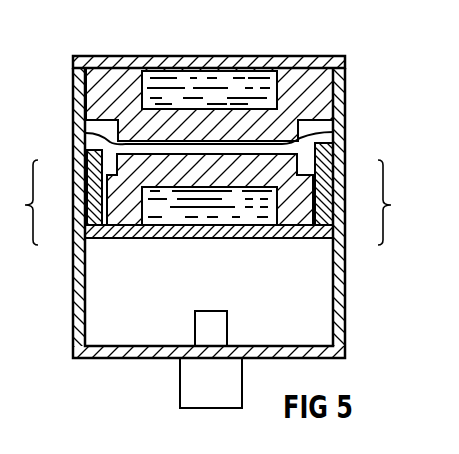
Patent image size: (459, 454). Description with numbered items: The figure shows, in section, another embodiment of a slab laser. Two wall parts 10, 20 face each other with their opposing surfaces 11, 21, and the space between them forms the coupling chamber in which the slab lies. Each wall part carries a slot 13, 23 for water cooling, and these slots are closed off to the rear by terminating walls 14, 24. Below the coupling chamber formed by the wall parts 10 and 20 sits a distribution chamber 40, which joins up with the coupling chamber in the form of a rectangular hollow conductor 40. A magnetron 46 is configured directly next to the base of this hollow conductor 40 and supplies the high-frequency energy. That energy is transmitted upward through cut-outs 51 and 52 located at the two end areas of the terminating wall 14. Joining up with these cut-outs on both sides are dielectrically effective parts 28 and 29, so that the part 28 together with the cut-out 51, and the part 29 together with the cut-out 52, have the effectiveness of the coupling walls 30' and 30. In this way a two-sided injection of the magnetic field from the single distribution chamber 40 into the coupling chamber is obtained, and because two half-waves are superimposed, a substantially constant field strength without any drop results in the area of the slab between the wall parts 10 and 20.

The wall part 10 is at (124, 188).
The opposing surface 11 is at (345, 132).
The slot 13 is at (180, 207).
The terminating wall 14 is at (223, 241).
The wall part 20 is at (345, 87).
The opposing surface 21 is at (86, 135).
The slot 23 is at (245, 77).
The terminating wall 24 is at (176, 56).
The dielectrically effective part 28 is at (92, 172).
The dielectrically effective part 29 is at (325, 178).
The coupling wall 30 is at (397, 202).
The coupling wall 30' is at (19, 202).
The distribution chamber 40 is at (320, 314).
The magnetron 46 is at (183, 392).
The cut-out 51 is at (90, 229).
The cut-out 52 is at (315, 228).